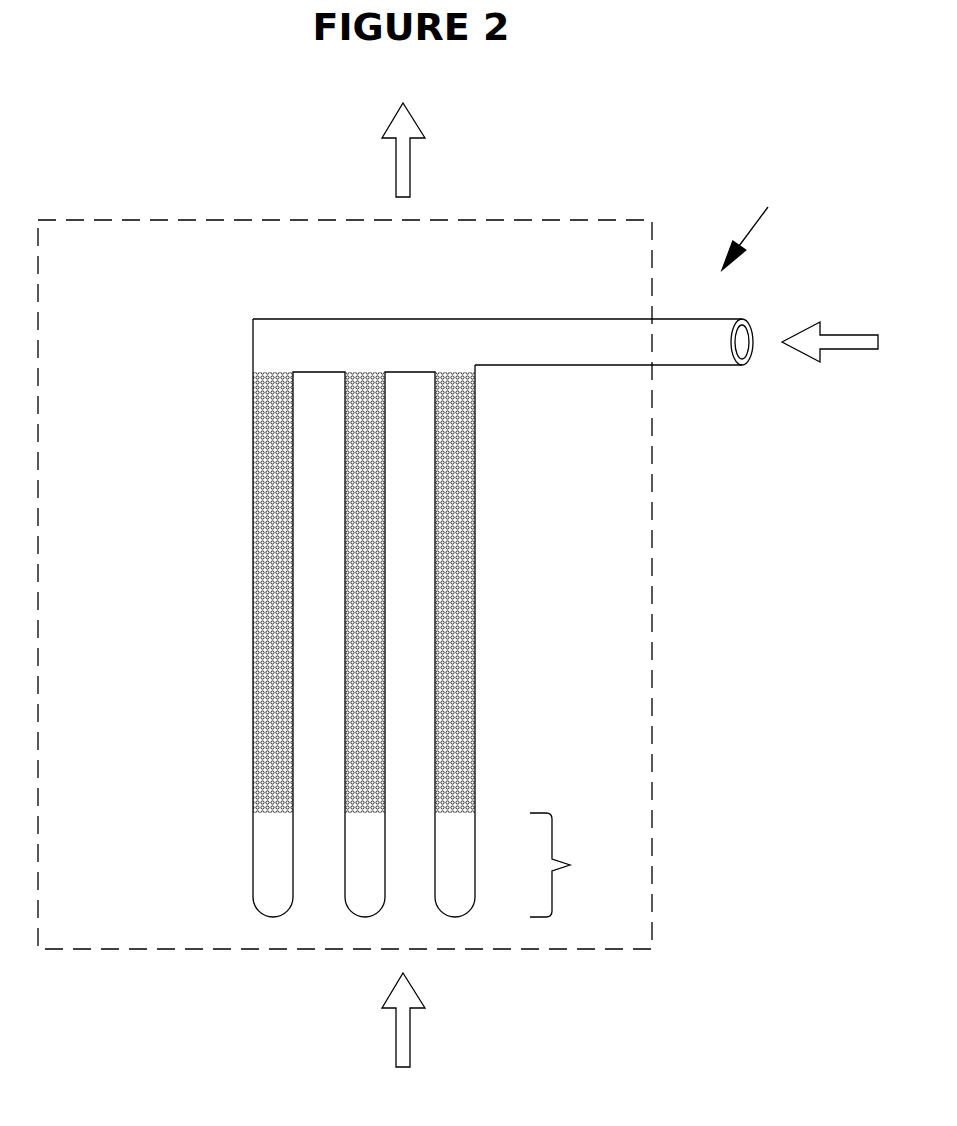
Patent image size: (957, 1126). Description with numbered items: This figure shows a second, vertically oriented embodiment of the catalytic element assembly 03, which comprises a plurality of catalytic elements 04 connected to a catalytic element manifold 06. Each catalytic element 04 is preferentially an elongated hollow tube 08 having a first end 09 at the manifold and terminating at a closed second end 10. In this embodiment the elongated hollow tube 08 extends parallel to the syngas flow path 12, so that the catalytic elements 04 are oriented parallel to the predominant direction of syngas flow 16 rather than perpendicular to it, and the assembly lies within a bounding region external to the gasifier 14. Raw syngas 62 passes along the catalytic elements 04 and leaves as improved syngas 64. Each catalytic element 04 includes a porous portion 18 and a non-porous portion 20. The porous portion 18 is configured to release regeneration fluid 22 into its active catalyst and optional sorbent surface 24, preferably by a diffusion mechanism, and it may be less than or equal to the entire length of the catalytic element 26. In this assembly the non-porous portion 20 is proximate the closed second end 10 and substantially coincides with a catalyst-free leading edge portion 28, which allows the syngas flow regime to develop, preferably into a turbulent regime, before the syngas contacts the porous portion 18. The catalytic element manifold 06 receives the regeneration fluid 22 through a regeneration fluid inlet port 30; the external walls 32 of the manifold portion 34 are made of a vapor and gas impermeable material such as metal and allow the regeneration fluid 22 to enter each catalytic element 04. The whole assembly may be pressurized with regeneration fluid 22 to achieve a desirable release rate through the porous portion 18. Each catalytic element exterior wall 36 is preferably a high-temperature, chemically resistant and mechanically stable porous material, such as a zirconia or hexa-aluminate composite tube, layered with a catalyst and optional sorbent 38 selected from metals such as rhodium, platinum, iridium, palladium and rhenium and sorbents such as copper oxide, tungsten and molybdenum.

The catalytic element assembly 03 is at (759, 225).
The catalytic elements 04 is at (344, 592).
The catalytic element manifold 06 is at (318, 319).
The elongated hollow tube 08 is at (344, 592).
The first end 09 is at (344, 592).
The closed second end 10 is at (262, 915).
The syngas flow path 12 is at (370, 584).
The bounding region external to the gasifier 14 is at (652, 267).
The predominant direction of syngas flow 16 is at (438, 585).
The porous portion 18 is at (394, 592).
The non-porous portion 20 is at (585, 865).
The regeneration fluid 22 is at (848, 335).
The active catalyst and optional sorbent surface 24 is at (344, 592).
The entire length of the catalytic element 26 is at (132, 372).
The leading edge portion 28 is at (585, 865).
The regeneration fluid inlet port 30 is at (741, 365).
The external walls 32 is at (694, 365).
The manifold portion 34 is at (460, 343).
The catalytic element exterior wall 36 is at (344, 592).
The catalyst and optional sorbent 38 is at (253, 717).
The raw syngas 62 is at (410, 1037).
The improved syngas 64 is at (410, 167).